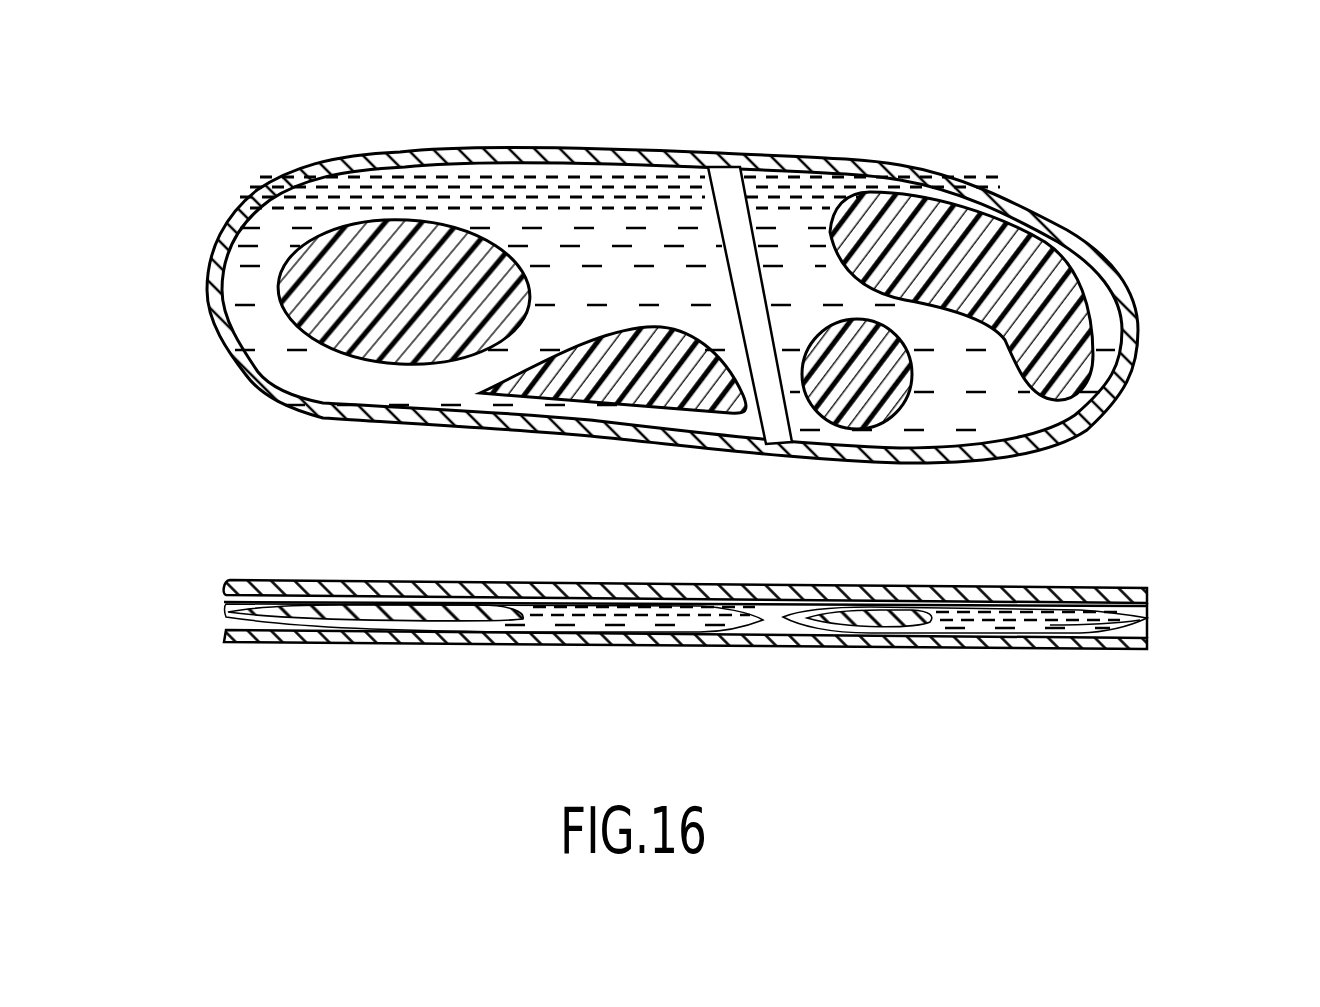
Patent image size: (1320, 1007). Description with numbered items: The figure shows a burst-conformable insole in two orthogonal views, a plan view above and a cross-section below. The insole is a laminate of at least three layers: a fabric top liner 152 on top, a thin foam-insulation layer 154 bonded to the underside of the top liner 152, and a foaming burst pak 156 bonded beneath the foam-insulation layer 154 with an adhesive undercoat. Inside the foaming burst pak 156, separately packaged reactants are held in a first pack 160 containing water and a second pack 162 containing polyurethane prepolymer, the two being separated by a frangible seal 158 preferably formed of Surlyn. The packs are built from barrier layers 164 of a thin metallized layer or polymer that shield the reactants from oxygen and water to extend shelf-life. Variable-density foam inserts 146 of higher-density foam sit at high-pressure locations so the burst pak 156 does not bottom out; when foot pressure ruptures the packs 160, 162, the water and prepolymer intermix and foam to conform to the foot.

The variable-density foam inserts 146 is at (990, 232).
The fabric top liner 152 is at (223, 582).
The foam-insulation layer 154 is at (223, 609).
The foaming burst pak 156 is at (313, 202).
The frangible seal 158 is at (737, 190).
The first pack 160 is at (586, 623).
The second pack 162 is at (997, 632).
The barrier layers 164 is at (1148, 618).